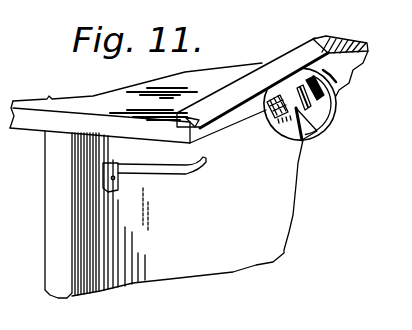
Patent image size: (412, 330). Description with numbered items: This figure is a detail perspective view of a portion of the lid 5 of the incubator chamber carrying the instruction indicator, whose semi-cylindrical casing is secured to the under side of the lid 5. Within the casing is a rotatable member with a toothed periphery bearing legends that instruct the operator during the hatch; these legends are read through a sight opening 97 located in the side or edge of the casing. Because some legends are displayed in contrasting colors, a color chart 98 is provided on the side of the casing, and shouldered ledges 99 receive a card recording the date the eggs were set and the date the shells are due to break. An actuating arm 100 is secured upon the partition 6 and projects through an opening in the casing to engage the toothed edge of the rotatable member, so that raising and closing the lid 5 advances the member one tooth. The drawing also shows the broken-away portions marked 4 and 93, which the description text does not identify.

The table top 4 is at (50, 99).
The lid 5 is at (290, 62).
The partition 6 is at (52, 215).
The disk 93 is at (322, 130).
The sight opening 97 is at (312, 142).
The color chart 98 is at (275, 123).
The shouldered ledges 99 is at (297, 100).
The actuating arm 100 is at (173, 178).